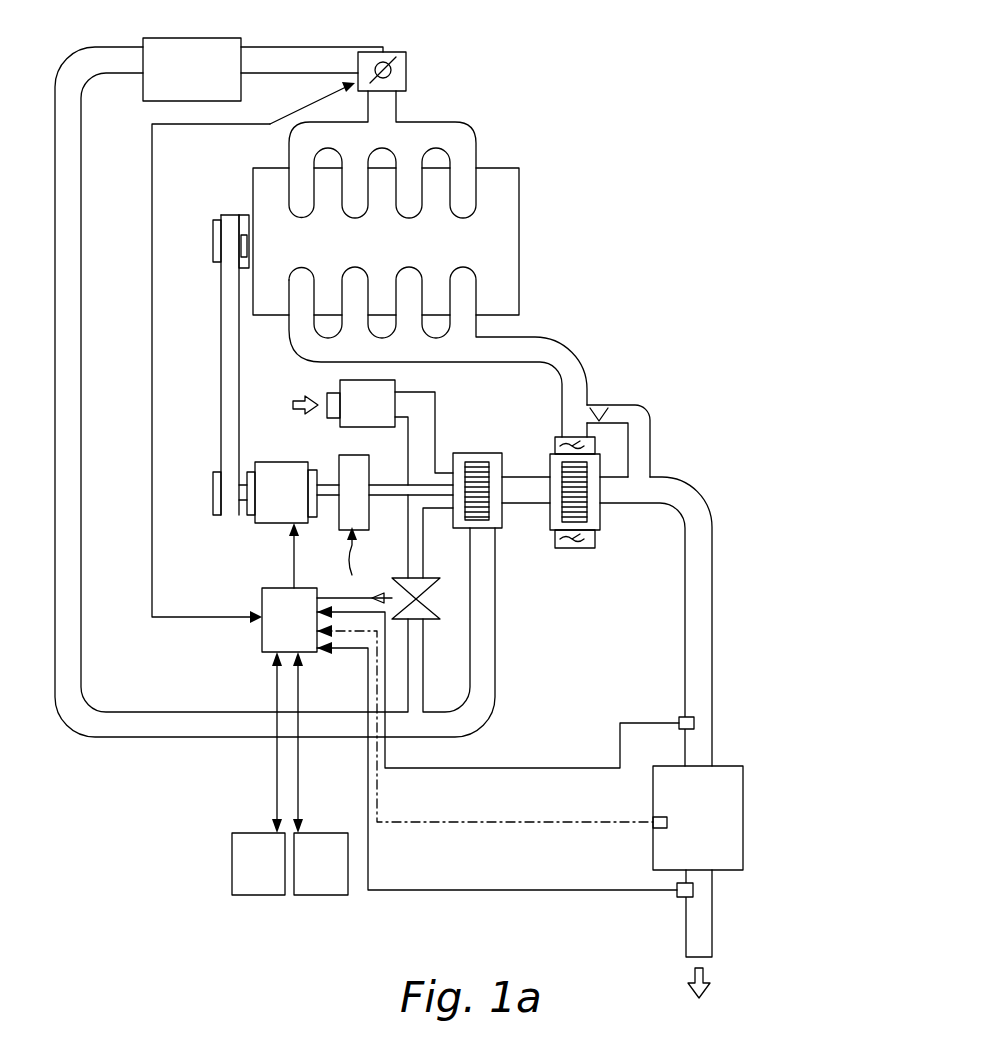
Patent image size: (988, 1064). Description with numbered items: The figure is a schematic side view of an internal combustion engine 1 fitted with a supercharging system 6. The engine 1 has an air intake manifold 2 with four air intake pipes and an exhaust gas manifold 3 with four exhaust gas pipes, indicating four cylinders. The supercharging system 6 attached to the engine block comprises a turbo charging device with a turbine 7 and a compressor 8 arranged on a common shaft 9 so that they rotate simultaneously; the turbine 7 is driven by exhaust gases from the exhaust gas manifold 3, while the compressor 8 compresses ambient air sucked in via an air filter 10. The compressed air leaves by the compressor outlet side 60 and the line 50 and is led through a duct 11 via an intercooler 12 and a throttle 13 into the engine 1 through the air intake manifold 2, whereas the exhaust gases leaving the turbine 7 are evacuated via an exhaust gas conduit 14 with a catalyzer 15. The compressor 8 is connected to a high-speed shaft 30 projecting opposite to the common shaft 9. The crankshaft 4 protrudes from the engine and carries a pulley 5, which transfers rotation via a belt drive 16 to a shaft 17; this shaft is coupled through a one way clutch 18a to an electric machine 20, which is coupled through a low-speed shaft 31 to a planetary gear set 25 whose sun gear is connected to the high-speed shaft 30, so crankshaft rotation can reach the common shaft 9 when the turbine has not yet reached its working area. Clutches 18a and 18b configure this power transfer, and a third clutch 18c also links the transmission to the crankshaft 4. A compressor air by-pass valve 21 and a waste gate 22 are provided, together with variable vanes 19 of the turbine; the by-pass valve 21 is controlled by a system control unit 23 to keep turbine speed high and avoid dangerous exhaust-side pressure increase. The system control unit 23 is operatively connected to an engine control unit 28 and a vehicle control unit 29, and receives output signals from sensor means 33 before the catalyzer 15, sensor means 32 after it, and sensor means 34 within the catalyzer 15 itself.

The internal combustion engine 1 is at (614, 134).
The air intake manifold 2 is at (466, 143).
The exhaust gas manifold 3 is at (468, 324).
The crankshaft 4 is at (238, 215).
The pulley 5 is at (213, 240).
The supercharging system 6 is at (535, 556).
The turbine 7 is at (595, 521).
The compressor 8 is at (490, 530).
The common shaft 9 is at (530, 487).
The air filter 10 is at (344, 403).
The duct 11 is at (62, 333).
The intercooler 12 is at (192, 69).
The throttle 13 is at (406, 73).
The exhaust gas conduit 14 is at (692, 920).
The catalyzer 15 is at (698, 818).
The belt drive 16 is at (221, 400).
The shaft 17 is at (213, 497).
The one way clutch 18a is at (252, 518).
The clutch 18b is at (308, 470).
The third clutch 18c is at (244, 262).
The variable vanes 19 is at (595, 549).
The electric machine 20 is at (281, 492).
The compressor air by-pass valve 21 is at (420, 604).
The waste gate 22 is at (600, 416).
The system control unit 23 is at (470, 706).
The planetary gear set 25 is at (348, 560).
The engine control unit 28 is at (320, 773).
The vehicle control unit 29 is at (258, 773).
The high-speed shaft 30 is at (391, 485).
The low-speed shaft 31 is at (332, 472).
The sensor means 32 is at (693, 890).
The sensor means 33 is at (694, 722).
The sensor means 34 is at (653, 823).
The air line 50 is at (440, 474).
The compressor outlet side 60 is at (478, 532).